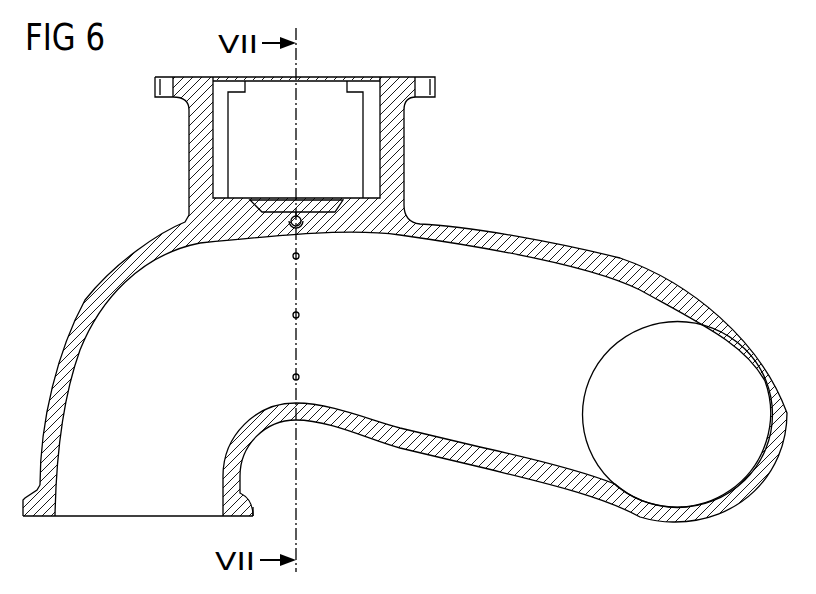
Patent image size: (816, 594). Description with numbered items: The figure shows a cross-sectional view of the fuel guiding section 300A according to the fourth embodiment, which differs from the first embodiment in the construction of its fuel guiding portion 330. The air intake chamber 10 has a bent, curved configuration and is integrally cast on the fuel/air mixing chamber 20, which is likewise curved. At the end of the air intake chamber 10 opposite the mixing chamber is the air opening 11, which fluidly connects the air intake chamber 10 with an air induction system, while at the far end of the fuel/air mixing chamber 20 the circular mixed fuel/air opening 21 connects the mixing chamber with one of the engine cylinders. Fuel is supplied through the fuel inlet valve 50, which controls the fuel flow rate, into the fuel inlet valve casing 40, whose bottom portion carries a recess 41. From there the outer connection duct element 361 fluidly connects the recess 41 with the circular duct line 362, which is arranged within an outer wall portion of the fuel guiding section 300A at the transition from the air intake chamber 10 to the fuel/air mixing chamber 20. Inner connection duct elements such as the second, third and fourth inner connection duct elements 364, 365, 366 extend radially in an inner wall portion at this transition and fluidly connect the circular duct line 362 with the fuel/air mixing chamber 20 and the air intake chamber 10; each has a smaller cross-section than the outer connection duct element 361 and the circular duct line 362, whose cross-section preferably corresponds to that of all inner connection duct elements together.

The fuel guiding section 300A is at (538, 185).
The air intake chamber 10 is at (162, 428).
The air opening 11 is at (117, 518).
The fuel/air mixing chamber 20 is at (445, 346).
The mixed fuel/air opening 21 is at (693, 425).
The fuel inlet valve casing 40 is at (404, 156).
The recess 41 is at (273, 208).
The fuel inlet valve 50 is at (322, 112).
The fuel guiding portion 330 is at (265, 335).
The outer connection duct element 361 is at (303, 208).
The circular duct line 362 is at (290, 226).
The second inner connection duct element 364 is at (300, 256).
The third inner connection duct element 365 is at (300, 315).
The fourth inner connection duct element 366 is at (300, 377).